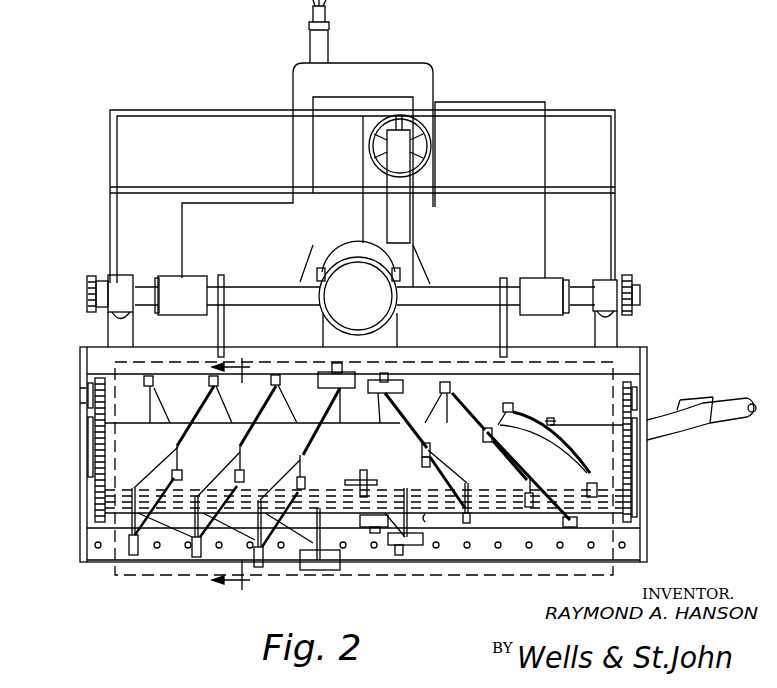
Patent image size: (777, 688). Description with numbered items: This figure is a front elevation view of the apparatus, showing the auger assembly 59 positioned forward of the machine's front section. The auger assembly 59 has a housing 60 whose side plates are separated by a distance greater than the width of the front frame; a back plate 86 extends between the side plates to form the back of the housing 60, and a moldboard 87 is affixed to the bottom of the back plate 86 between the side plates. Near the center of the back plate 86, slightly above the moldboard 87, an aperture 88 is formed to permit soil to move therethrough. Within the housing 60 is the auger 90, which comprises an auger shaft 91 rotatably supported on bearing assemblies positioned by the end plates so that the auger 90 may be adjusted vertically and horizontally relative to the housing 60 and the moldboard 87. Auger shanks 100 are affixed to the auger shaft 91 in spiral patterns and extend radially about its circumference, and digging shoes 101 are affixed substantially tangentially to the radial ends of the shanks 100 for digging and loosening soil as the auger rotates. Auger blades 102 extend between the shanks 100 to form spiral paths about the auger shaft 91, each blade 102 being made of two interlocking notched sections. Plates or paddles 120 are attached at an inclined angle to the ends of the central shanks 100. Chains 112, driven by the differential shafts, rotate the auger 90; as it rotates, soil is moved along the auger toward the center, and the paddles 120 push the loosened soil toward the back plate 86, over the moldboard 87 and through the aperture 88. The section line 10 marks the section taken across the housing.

The section line 10- 10 is at (364, 473).
The auger assembly 59 is at (656, 368).
The housing 60 is at (95, 353).
The back plate 86 is at (568, 414).
The moldboard 87 is at (450, 558).
The aperture 88 is at (427, 519).
The auger 90 is at (500, 518).
The auger shaft 91 is at (551, 469).
The auger shanks 100 is at (148, 422).
The digging shoes 101 is at (452, 386).
The auger blades 102 is at (400, 422).
The chains 112 is at (97, 453).
The plates or paddles 120 is at (350, 388).